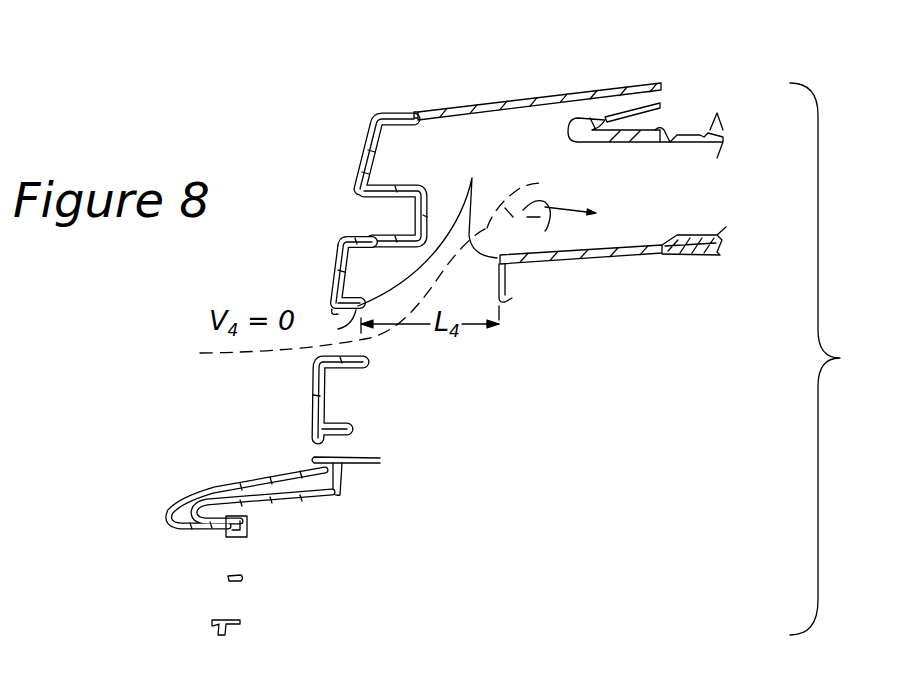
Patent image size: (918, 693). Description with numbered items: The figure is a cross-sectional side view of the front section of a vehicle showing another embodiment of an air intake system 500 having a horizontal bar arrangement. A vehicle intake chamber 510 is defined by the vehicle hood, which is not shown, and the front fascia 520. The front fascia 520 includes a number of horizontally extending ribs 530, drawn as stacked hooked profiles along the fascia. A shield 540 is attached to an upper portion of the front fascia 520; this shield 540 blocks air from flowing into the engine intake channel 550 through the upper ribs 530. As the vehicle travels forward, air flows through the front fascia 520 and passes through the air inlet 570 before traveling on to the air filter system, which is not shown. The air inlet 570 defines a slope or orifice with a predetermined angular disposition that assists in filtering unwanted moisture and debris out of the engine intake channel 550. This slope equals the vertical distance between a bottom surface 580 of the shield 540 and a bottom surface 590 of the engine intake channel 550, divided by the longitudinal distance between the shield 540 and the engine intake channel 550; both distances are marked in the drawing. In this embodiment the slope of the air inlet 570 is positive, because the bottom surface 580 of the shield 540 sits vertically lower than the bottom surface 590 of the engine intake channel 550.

The air intake system 500 is at (847, 359).
The vehicle intake chamber 510 is at (505, 433).
The front fascia 520 is at (233, 482).
The horizontally extending ribs 530 is at (368, 143).
The shield 540 is at (417, 112).
The engine intake channel 550 is at (700, 141).
The air inlet 570 is at (430, 226).
The bottom surface of shield 580 is at (338, 329).
The bottom surface of engine intake channel 590 is at (556, 264).